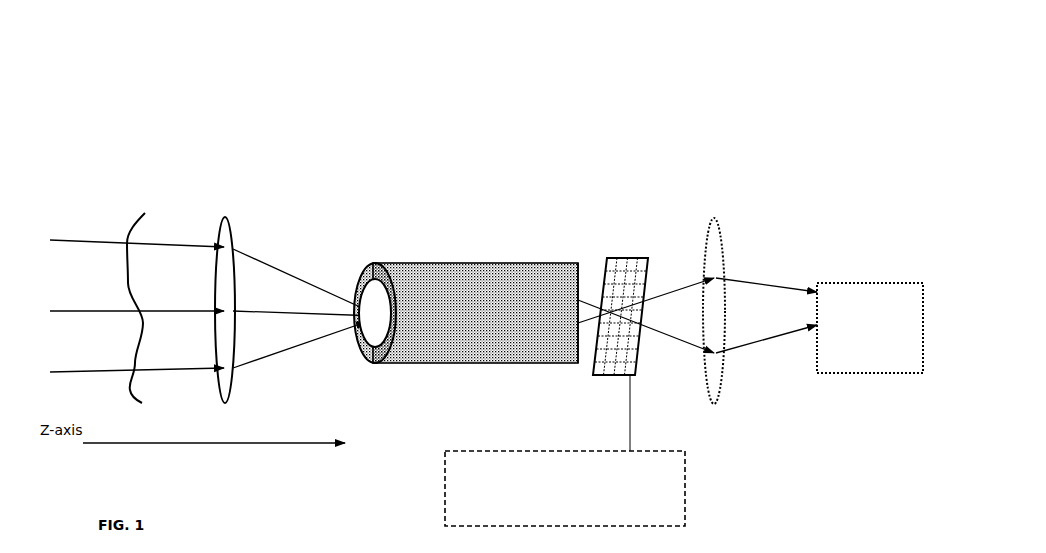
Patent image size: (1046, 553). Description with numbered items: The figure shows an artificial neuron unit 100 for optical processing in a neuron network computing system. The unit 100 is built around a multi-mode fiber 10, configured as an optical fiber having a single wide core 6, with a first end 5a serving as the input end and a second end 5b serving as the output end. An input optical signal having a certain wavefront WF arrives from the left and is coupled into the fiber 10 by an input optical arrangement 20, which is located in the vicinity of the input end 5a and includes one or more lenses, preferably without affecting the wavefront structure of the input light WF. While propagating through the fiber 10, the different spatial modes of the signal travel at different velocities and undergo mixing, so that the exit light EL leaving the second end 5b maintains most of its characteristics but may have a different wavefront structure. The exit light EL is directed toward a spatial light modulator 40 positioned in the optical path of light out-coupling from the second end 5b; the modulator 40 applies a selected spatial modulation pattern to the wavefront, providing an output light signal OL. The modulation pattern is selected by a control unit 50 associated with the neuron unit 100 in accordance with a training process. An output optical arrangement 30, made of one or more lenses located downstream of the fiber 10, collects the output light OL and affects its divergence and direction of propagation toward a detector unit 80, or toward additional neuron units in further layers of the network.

The artificial neuron unit 100 is at (336, 106).
The input light wavefront WF is at (124, 291).
The input optical arrangement 20 is at (218, 243).
The single wide core 6 is at (357, 287).
The first end 5a is at (383, 298).
The multi-mode fiber 10 is at (421, 275).
The second end 5b is at (575, 309).
The spatial light modulator 40 is at (626, 277).
The output optical arrangement 30 is at (717, 270).
The detector unit 80 is at (870, 328).
The control unit 50 is at (565, 450).
The exit light EL is at (590, 329).
The output light signal OL is at (772, 349).